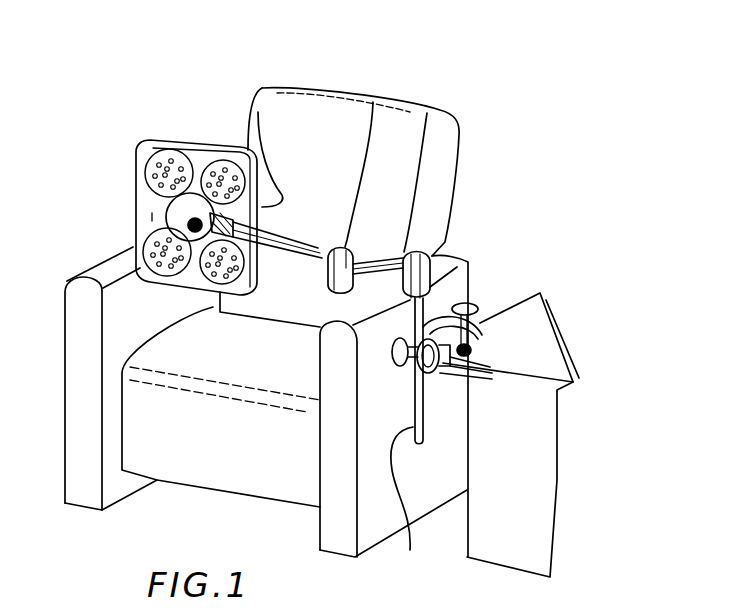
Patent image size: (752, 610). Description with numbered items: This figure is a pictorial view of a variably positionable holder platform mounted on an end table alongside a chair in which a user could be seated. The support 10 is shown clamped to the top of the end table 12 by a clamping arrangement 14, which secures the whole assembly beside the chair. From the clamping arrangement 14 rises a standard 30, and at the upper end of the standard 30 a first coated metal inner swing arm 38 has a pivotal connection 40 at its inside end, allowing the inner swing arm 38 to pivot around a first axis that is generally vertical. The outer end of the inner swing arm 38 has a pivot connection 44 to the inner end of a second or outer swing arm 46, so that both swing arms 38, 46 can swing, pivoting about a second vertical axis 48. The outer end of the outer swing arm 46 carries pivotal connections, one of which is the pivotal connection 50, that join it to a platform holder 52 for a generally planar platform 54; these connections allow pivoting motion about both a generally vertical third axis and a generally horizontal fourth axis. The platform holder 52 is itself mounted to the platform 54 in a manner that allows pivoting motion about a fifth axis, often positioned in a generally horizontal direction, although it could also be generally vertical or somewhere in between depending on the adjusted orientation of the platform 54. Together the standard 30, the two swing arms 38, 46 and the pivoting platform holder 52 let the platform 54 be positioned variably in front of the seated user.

The support 10 is at (430, 240).
The end table 12 is at (550, 330).
The clamping arrangement 14 is at (480, 307).
The standard 30 is at (410, 550).
The inner swing arm 38 is at (412, 205).
The pivotal connection 40 is at (432, 262).
The pivot connection 44 is at (377, 103).
The outer swing arm 46 is at (287, 243).
The second vertical axis 48 is at (290, 178).
The pivotal connection 50 is at (243, 150).
The platform holder 52 is at (167, 210).
The platform 54 is at (150, 140).